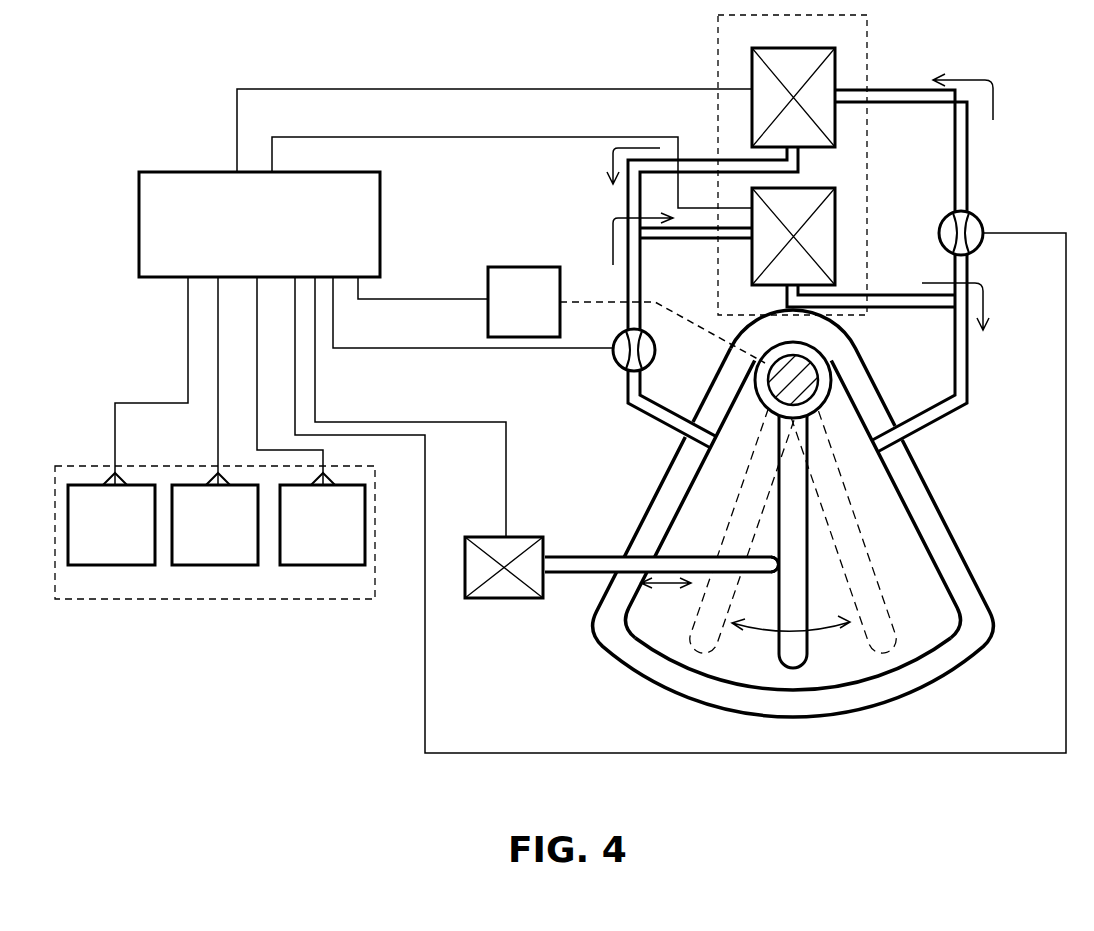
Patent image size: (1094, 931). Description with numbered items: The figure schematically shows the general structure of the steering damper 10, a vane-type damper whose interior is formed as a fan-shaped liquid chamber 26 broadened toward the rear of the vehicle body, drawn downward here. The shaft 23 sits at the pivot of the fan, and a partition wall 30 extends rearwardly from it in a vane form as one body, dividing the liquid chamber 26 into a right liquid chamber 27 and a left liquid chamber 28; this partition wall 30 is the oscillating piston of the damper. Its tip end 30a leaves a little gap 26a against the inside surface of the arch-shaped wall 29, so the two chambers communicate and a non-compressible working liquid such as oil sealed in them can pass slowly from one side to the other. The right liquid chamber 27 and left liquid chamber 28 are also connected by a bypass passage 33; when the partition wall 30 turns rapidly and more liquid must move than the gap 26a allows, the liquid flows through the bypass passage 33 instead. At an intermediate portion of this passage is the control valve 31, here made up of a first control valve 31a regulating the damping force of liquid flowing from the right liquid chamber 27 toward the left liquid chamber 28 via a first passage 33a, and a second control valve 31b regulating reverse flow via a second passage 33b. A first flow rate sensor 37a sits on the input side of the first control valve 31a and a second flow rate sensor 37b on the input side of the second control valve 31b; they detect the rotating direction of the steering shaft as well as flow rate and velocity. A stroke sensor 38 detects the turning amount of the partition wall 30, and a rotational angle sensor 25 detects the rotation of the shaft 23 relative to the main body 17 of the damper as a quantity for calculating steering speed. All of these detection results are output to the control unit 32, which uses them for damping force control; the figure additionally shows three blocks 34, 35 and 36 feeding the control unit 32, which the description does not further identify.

The steering damper 10 is at (793, 516).
The main body 17 is at (660, 492).
The shaft 23 is at (815, 391).
The rotational angle sensor 25 is at (520, 266).
The liquid chamber 26 is at (729, 612).
The gap 26a is at (798, 677).
The right liquid chamber 27 is at (952, 600).
The left liquid chamber 28 is at (657, 615).
The arch-shaped wall 29 is at (930, 633).
The partition wall 30 is at (758, 568).
The tip end 30a is at (780, 662).
The control valve 31 is at (796, 165).
The first control valve 31a is at (828, 70).
The second control valve 31b is at (827, 232).
The control unit 32 is at (182, 180).
The bypass passage 33 is at (935, 424).
The first passage 33a is at (910, 105).
The second passage 33b is at (682, 233).
The sensor 34 is at (100, 555).
The sensor 35 is at (213, 558).
The sensor 36 is at (323, 557).
The first flow rate sensor 37a is at (978, 218).
The second flow rate sensor 37b is at (618, 362).
The stroke sensor 38 is at (510, 592).